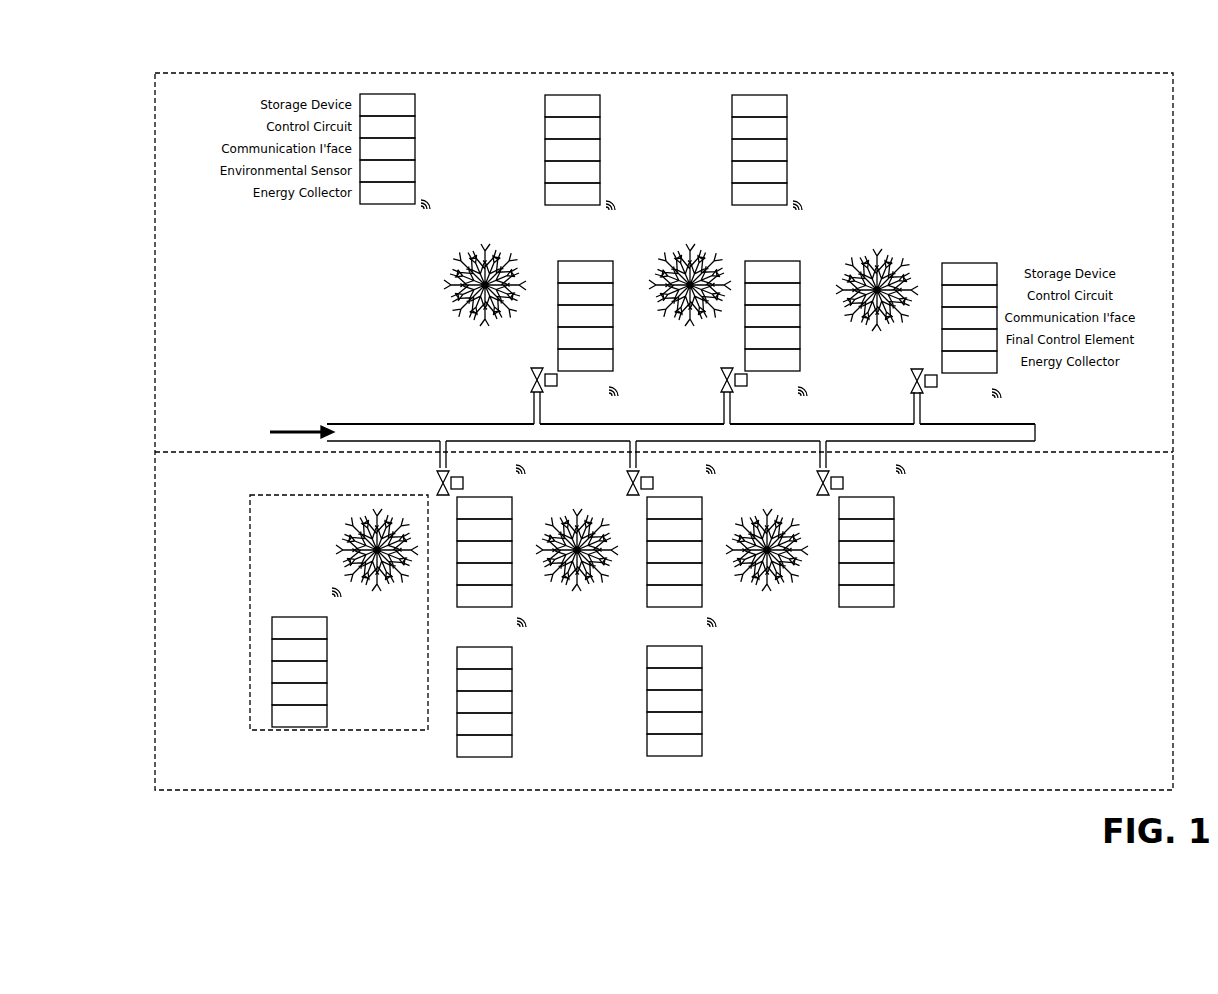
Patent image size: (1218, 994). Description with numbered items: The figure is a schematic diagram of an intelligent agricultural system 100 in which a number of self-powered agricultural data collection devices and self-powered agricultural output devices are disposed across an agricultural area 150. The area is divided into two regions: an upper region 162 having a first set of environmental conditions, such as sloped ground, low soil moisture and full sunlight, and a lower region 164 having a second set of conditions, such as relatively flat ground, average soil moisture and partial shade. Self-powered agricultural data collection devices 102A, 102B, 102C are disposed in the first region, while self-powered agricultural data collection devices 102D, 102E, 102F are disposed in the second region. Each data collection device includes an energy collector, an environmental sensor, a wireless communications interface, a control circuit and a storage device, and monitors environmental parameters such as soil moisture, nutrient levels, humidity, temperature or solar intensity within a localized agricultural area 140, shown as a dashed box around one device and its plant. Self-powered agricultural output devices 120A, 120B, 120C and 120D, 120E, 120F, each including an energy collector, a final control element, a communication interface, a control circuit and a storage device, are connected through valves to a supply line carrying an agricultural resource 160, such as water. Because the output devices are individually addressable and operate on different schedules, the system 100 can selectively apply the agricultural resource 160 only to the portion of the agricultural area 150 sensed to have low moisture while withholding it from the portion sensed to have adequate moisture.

The intelligent agricultural system 100 is at (1110, 55).
The self-powered agricultural data collection device 102A is at (395, 162).
The self-powered agricultural data collection device 102B is at (580, 163).
The self-powered agricultural data collection device 102C is at (767, 163).
The self-powered agricultural data collection device 102D is at (680, 619).
The self-powered agricultural data collection device 102E is at (490, 619).
The self-powered agricultural data collection device 102F is at (305, 589).
The self-powered agricultural output device 120A is at (574, 328).
The self-powered agricultural output device 120B is at (764, 328).
The self-powered agricultural output device 120C is at (956, 330).
The self-powered agricultural output device 120D is at (843, 484).
The self-powered agricultural output device 120E is at (653, 484).
The self-powered agricultural output device 120F is at (463, 484).
The localized agricultural area 140 is at (414, 719).
The agricultural area 150 is at (838, 72).
The agricultural resource 160 is at (622, 427).
The above-ground region 162 is at (1163, 92).
The below-ground region 164 is at (1159, 779).